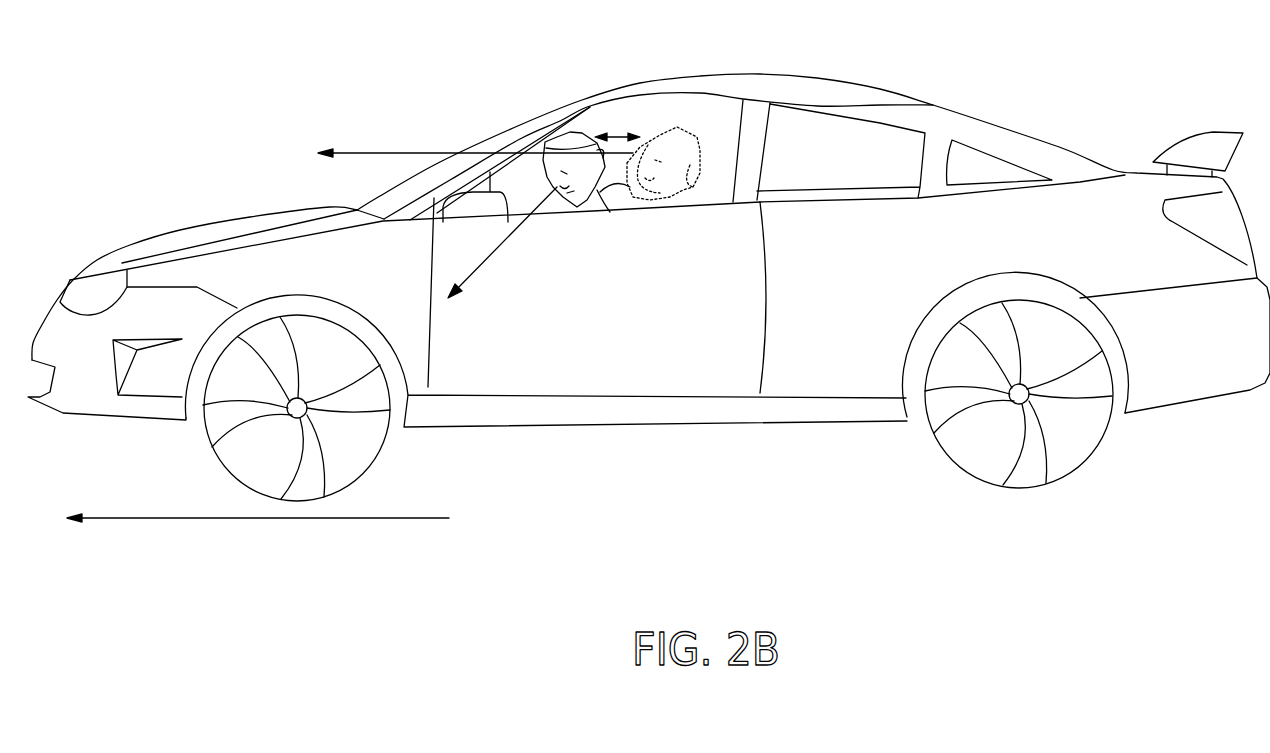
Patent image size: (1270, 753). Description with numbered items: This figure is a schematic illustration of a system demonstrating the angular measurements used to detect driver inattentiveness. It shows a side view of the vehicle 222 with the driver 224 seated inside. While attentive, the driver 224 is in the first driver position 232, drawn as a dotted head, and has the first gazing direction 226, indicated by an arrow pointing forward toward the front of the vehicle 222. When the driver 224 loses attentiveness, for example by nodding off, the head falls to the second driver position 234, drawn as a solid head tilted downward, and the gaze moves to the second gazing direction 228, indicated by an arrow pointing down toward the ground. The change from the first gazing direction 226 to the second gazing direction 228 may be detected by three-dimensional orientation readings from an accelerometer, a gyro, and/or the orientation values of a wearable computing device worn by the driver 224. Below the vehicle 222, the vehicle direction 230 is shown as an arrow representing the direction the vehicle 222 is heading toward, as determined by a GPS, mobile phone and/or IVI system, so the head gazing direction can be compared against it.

The vehicle 222 is at (907, 298).
The driver 224 is at (600, 222).
The gazing direction 1 226 is at (403, 150).
The gazing direction 2 228 is at (518, 252).
The vehicle direction 230 is at (323, 596).
The driver position 1 232 is at (704, 114).
The driver position 2 234 is at (602, 156).